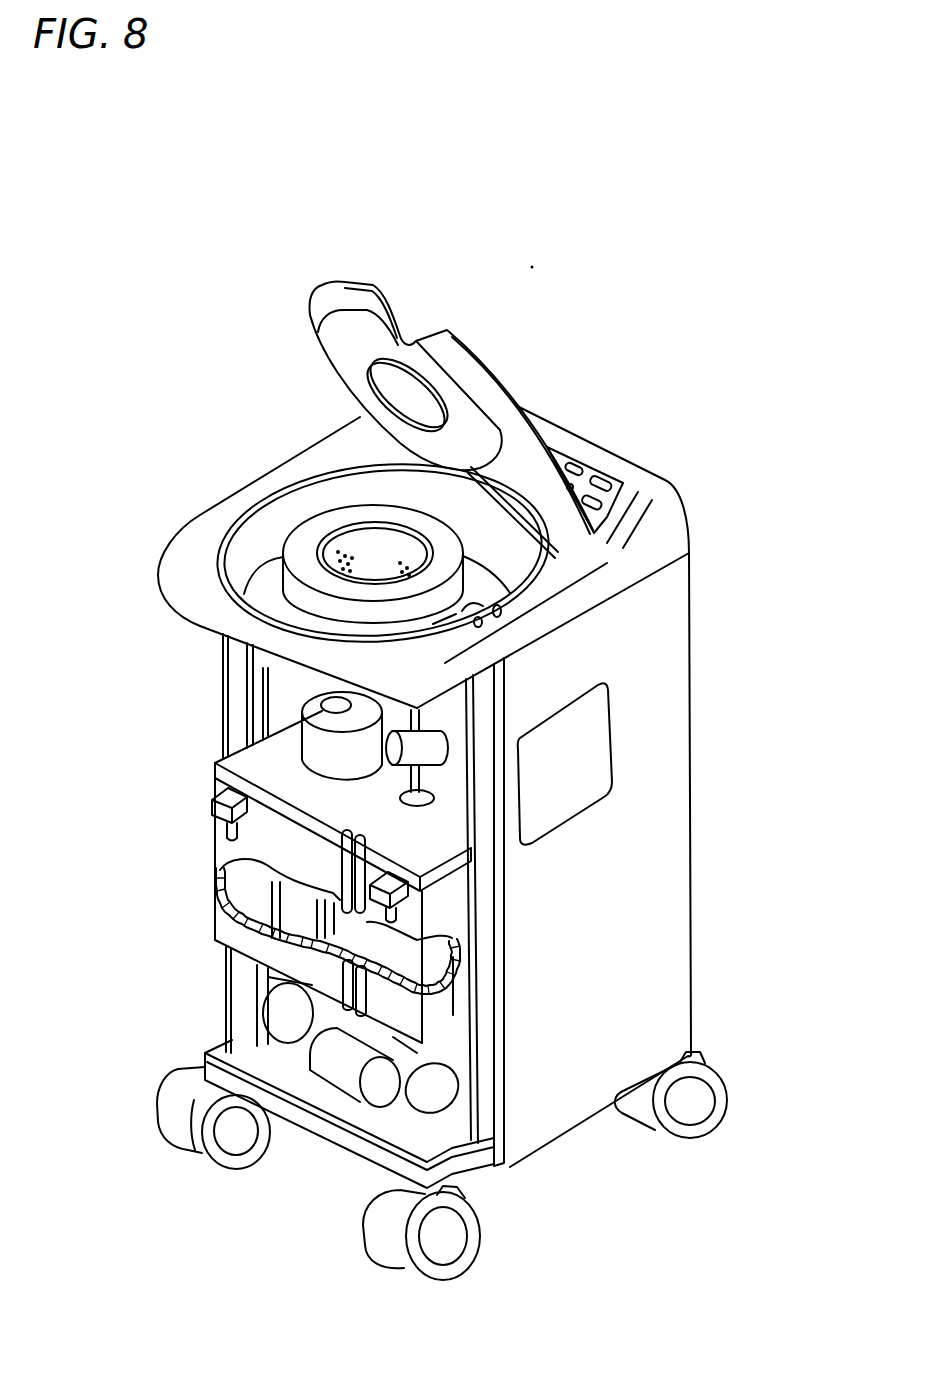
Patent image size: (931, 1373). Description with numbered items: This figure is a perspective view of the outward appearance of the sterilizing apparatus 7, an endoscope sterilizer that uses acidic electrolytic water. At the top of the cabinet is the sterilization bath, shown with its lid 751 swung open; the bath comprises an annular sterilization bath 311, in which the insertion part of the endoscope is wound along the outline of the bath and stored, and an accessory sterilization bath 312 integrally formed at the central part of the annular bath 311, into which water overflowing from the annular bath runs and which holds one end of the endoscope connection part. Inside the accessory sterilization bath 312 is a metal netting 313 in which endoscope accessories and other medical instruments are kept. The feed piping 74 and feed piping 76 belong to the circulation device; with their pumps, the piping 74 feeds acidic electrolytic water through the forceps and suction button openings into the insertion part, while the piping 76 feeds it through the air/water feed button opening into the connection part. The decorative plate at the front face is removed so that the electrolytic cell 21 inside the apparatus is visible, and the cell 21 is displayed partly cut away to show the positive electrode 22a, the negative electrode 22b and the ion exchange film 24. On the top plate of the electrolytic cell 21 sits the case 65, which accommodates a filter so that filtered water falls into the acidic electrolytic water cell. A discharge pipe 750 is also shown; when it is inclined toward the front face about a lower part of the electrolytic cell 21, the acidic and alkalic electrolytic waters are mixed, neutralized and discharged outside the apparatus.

The sterilizing apparatus 7 is at (665, 286).
The lid 751 is at (366, 283).
The annular sterilization bath 311 is at (265, 543).
The metal netting 313 is at (335, 537).
The accessory sterilization bath 312 is at (376, 556).
The feed piping 74 is at (505, 612).
The feed piping 76 is at (480, 620).
The case 65 is at (307, 747).
The electrolytic cell 21 is at (213, 842).
The positive electrode 22a is at (343, 870).
The discharge pipe 750 is at (335, 926).
The ion exchange film 24 is at (335, 930).
The negative electrode 22b is at (393, 942).